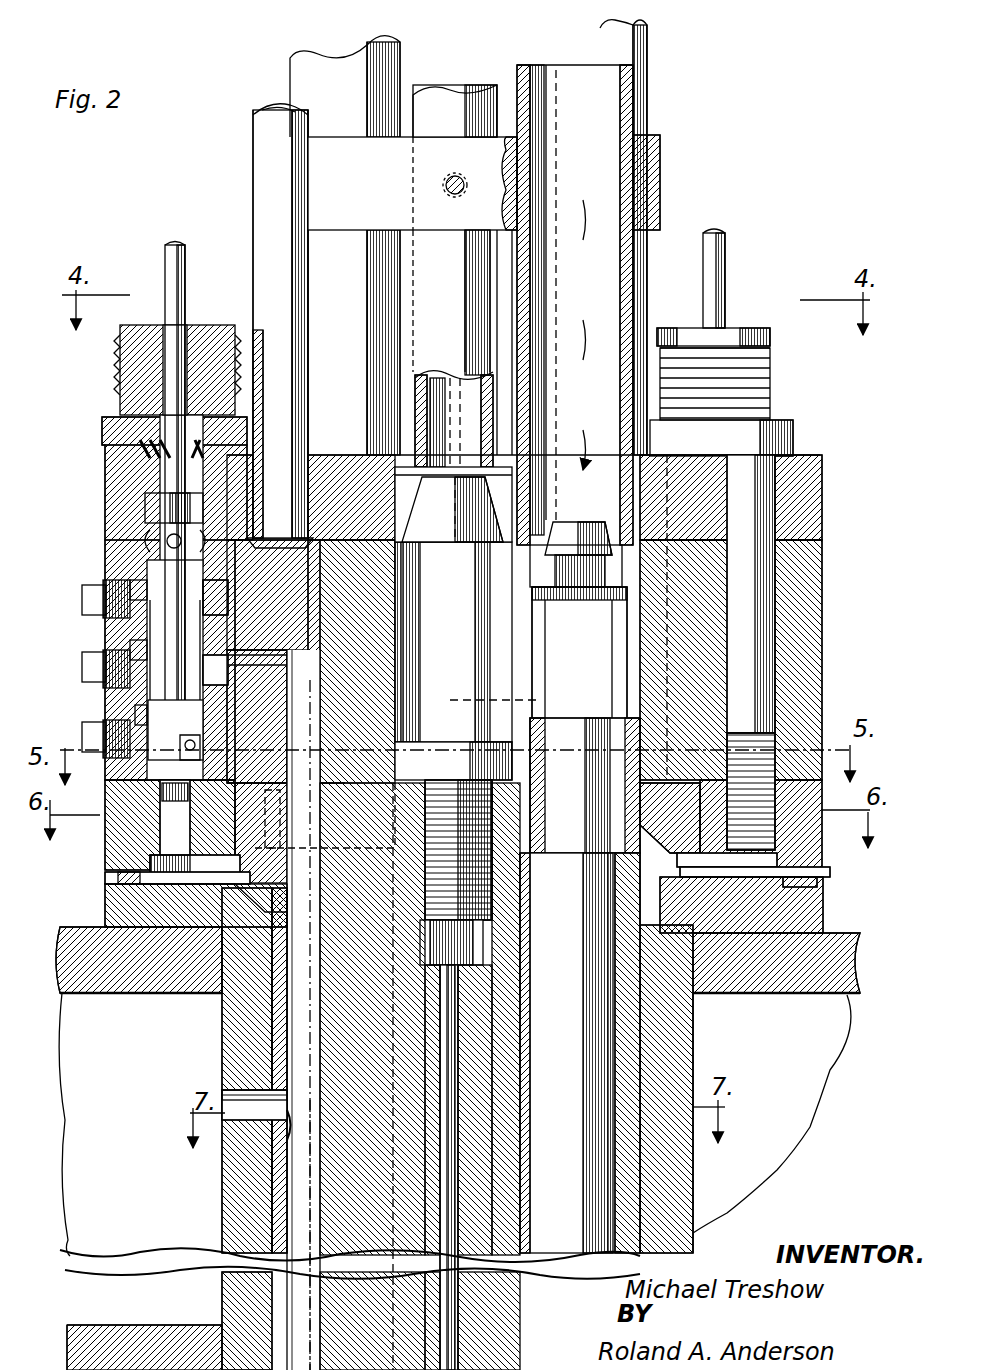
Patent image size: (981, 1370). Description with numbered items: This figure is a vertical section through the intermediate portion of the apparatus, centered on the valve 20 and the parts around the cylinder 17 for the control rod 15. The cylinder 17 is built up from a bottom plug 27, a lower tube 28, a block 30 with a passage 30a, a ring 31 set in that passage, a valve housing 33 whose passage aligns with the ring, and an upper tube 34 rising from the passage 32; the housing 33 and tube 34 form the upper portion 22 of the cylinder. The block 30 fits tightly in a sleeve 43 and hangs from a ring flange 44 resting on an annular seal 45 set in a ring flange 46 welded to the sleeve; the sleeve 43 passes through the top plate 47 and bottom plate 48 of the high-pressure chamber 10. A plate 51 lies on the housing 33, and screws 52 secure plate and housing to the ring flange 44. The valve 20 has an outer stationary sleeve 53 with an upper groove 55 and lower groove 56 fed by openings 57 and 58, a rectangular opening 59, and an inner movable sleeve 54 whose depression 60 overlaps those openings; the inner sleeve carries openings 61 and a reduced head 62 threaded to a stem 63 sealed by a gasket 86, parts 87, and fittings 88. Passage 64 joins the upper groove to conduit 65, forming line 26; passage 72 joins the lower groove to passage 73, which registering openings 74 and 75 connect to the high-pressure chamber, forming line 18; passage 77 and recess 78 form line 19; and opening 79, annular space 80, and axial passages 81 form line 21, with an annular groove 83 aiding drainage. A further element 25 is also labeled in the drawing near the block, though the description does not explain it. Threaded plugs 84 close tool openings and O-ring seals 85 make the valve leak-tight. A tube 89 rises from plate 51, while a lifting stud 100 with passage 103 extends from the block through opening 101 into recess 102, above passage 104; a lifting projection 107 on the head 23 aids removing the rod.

The high-pressure chamber 10 is at (147, 1099).
The control rod 15 is at (594, 1219).
The cylinder 17 is at (410, 58).
The line 18 is at (300, 1232).
The line 19 is at (322, 800).
The valve 20 is at (100, 545).
The line 21 is at (210, 990).
The upper portion of the cylinder 22 is at (408, 80).
The head 23 is at (597, 658).
The passage 25 is at (290, 1005).
The line 26 is at (250, 133).
The bottom plug 27 is at (625, 1063).
The lower tube 28 is at (640, 820).
The block 30 is at (380, 1199).
The passage 30a is at (640, 1187).
The ring 31 is at (540, 822).
The passage 32 is at (605, 555).
The valve housing 33 is at (815, 662).
The upper tube 34 is at (628, 290).
The sleeve 43 is at (700, 1050).
The ring flange 44 is at (800, 857).
The annular seal 45 is at (815, 882).
The ring flange 46 is at (830, 920).
The top plate 47 is at (105, 995).
The bottom plate 48 is at (175, 1345).
The plate 51 is at (815, 505).
The screws 52 is at (760, 590).
The outer stationary sleeve 53 is at (100, 732).
The inner movable sleeve 54 is at (145, 715).
The upper groove 55 is at (215, 600).
The lower groove 56 is at (225, 672).
The openings 57 is at (125, 606).
The openings 58 is at (125, 676).
The rectangular opening 59 is at (175, 730).
The external circumferential depression 60 is at (205, 648).
The openings 61 is at (165, 540).
The reduced head 62 is at (150, 505).
The stem 63 is at (184, 292).
The passage 64 is at (285, 625).
The conduit 65 is at (253, 168).
The passage 72 is at (257, 716).
The passage 73 is at (275, 1038).
The opening 74 is at (245, 1150).
The opening 75 is at (255, 1160).
The passage 77 is at (660, 758).
The recess 78 is at (322, 835).
The opening 79 is at (160, 850).
The annular space 80 is at (135, 873).
The axial passages 81 is at (700, 1075).
The annular groove 83 is at (160, 810).
The threaded plugs 84 is at (90, 600).
The O-ring seals 85 is at (140, 590).
The gasket 86 is at (150, 450).
The parts 87 is at (120, 415).
The fittings 88 is at (122, 340).
The tube 89 is at (468, 318).
The lifting stud 100 is at (405, 440).
The opening 101 is at (535, 598).
The recess 102 is at (400, 497).
The passage 103 is at (470, 706).
The passage 104 is at (460, 1185).
The lifting projection 107 is at (580, 520).